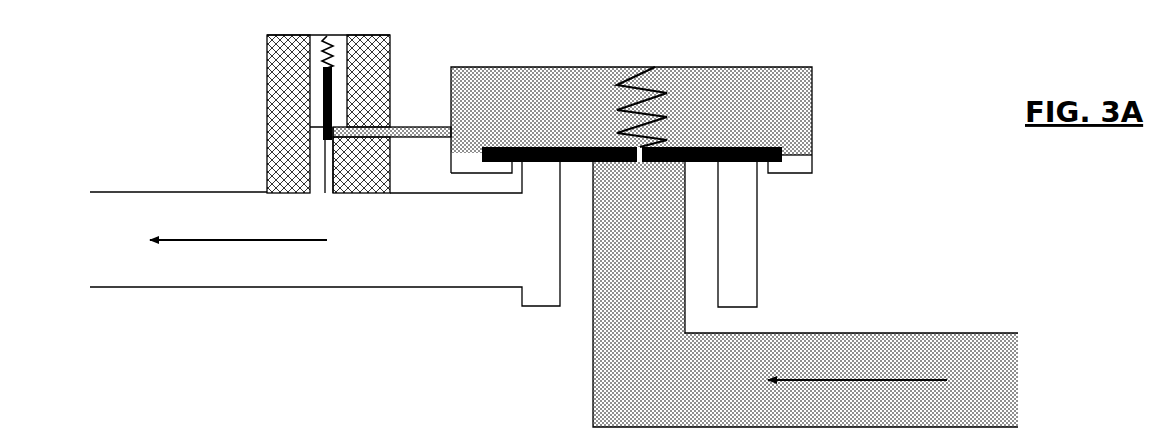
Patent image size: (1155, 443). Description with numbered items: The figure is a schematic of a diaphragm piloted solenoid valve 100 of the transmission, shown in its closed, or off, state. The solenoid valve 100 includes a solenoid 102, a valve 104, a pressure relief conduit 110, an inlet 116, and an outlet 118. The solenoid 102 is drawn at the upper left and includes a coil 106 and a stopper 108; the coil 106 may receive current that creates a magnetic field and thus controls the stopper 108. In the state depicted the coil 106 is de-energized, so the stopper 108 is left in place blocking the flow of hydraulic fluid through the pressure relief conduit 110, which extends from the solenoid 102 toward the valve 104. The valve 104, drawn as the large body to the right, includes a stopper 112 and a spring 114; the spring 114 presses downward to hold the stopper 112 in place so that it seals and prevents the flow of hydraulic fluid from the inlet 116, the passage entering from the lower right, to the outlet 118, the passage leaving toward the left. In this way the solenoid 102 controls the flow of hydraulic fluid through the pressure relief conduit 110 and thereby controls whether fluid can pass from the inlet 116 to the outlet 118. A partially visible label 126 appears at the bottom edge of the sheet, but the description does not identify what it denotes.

The solenoid valve 100 is at (952, 58).
The solenoid 102 is at (246, 39).
The valve 104 is at (752, 34).
The coil 106 is at (322, 38).
The stopper 108 is at (323, 105).
The pressure relief conduit 110 is at (352, 136).
The stopper 112 is at (812, 152).
The spring 114 is at (620, 85).
The inlet 116 is at (868, 340).
The outlet 118 is at (327, 280).
The label 126 is at (311, 442).